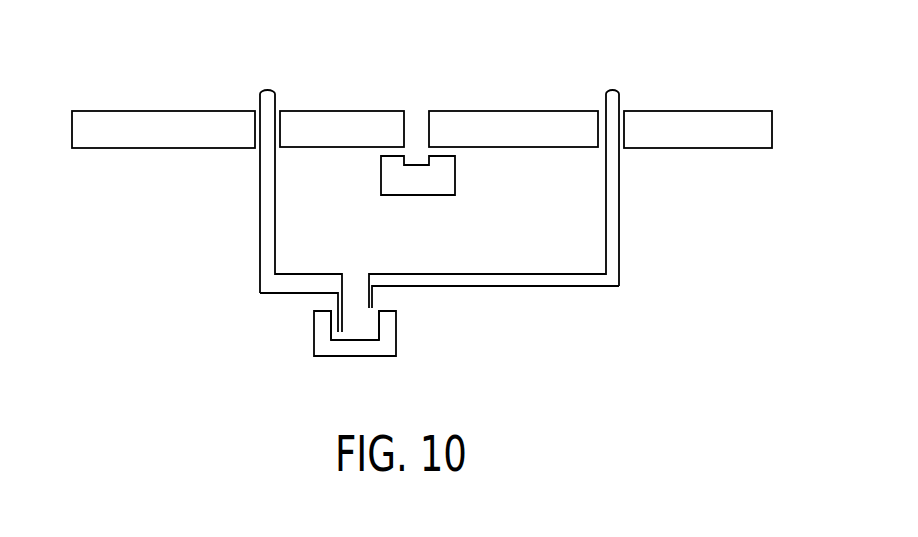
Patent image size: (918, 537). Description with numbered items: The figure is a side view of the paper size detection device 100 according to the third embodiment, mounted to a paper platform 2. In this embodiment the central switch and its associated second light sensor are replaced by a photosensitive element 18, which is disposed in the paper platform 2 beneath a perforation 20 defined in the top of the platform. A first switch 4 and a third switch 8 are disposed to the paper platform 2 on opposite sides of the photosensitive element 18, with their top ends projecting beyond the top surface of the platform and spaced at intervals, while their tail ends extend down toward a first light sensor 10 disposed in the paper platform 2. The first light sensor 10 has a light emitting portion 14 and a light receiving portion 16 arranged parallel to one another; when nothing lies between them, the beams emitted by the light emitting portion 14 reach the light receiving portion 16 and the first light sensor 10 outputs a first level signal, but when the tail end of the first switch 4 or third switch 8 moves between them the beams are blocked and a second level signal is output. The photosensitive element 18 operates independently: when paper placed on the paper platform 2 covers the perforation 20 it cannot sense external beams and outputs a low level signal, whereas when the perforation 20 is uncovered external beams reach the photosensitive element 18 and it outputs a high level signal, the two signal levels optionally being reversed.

The paper size detection device 100 is at (186, 289).
The paper platform 2 is at (753, 109).
The perforation 20 is at (417, 122).
The photosensitive element 18 is at (455, 186).
The first switch 4 is at (260, 220).
The third switch 8 is at (614, 89).
The first light sensor 10 is at (342, 354).
The light emitting portion 14 is at (321, 327).
The light receiving portion 16 is at (390, 330).